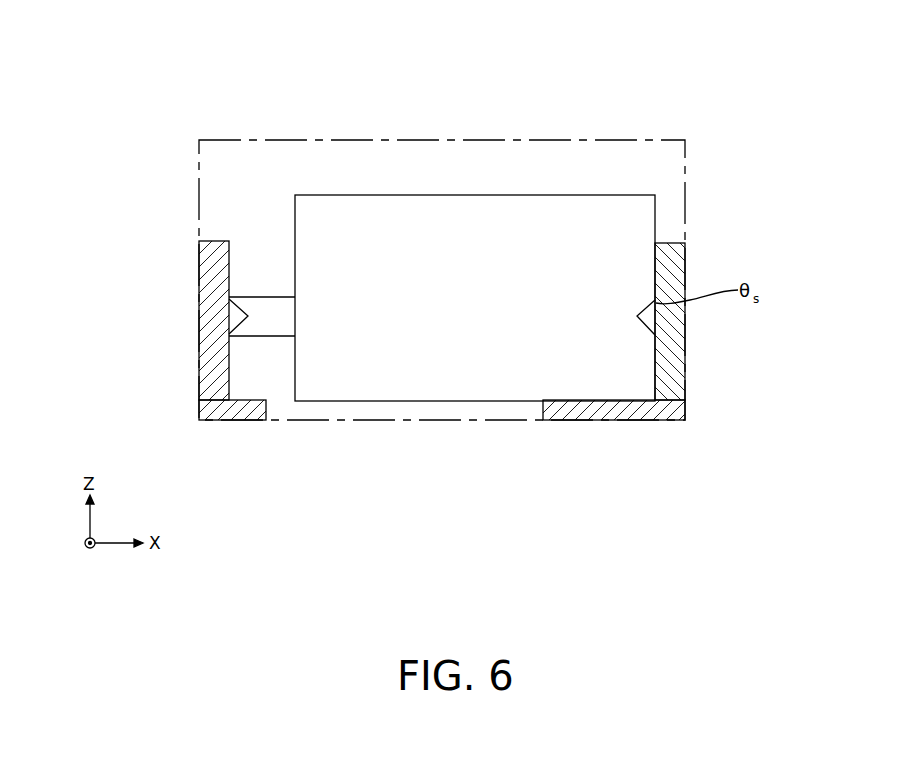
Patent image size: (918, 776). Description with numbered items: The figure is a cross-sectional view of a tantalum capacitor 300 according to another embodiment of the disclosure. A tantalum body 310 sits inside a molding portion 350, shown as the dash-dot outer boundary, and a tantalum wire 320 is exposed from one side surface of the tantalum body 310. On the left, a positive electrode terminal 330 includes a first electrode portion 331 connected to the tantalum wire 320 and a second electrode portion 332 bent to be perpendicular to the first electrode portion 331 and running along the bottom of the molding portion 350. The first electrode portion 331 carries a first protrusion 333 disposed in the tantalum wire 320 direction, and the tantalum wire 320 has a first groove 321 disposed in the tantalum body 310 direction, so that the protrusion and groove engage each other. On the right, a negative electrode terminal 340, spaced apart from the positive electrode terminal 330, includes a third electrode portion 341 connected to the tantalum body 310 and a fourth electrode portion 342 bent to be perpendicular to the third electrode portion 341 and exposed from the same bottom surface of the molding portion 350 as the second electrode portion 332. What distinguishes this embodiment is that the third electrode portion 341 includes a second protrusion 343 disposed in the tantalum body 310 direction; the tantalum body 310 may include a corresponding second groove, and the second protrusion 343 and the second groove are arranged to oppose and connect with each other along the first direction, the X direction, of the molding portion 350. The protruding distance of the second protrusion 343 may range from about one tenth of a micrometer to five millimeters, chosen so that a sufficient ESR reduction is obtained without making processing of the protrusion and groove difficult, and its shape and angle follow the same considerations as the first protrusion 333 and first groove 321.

The tantalum capacitor 300 is at (407, 40).
The molding portion 350 is at (614, 136).
The tantalum body 310 is at (643, 212).
The tantalum wire 320 is at (233, 360).
The first groove 321 is at (243, 297).
The first protrusion 333 is at (238, 318).
The positive electrode terminal 330 is at (194, 368).
The first electrode portion 331 is at (199, 395).
The second electrode portion 332 is at (249, 414).
The negative electrode terminal 340 is at (664, 368).
The third electrode portion 341 is at (668, 390).
The fourth electrode portion 342 is at (633, 416).
The second protrusion 343 is at (655, 325).